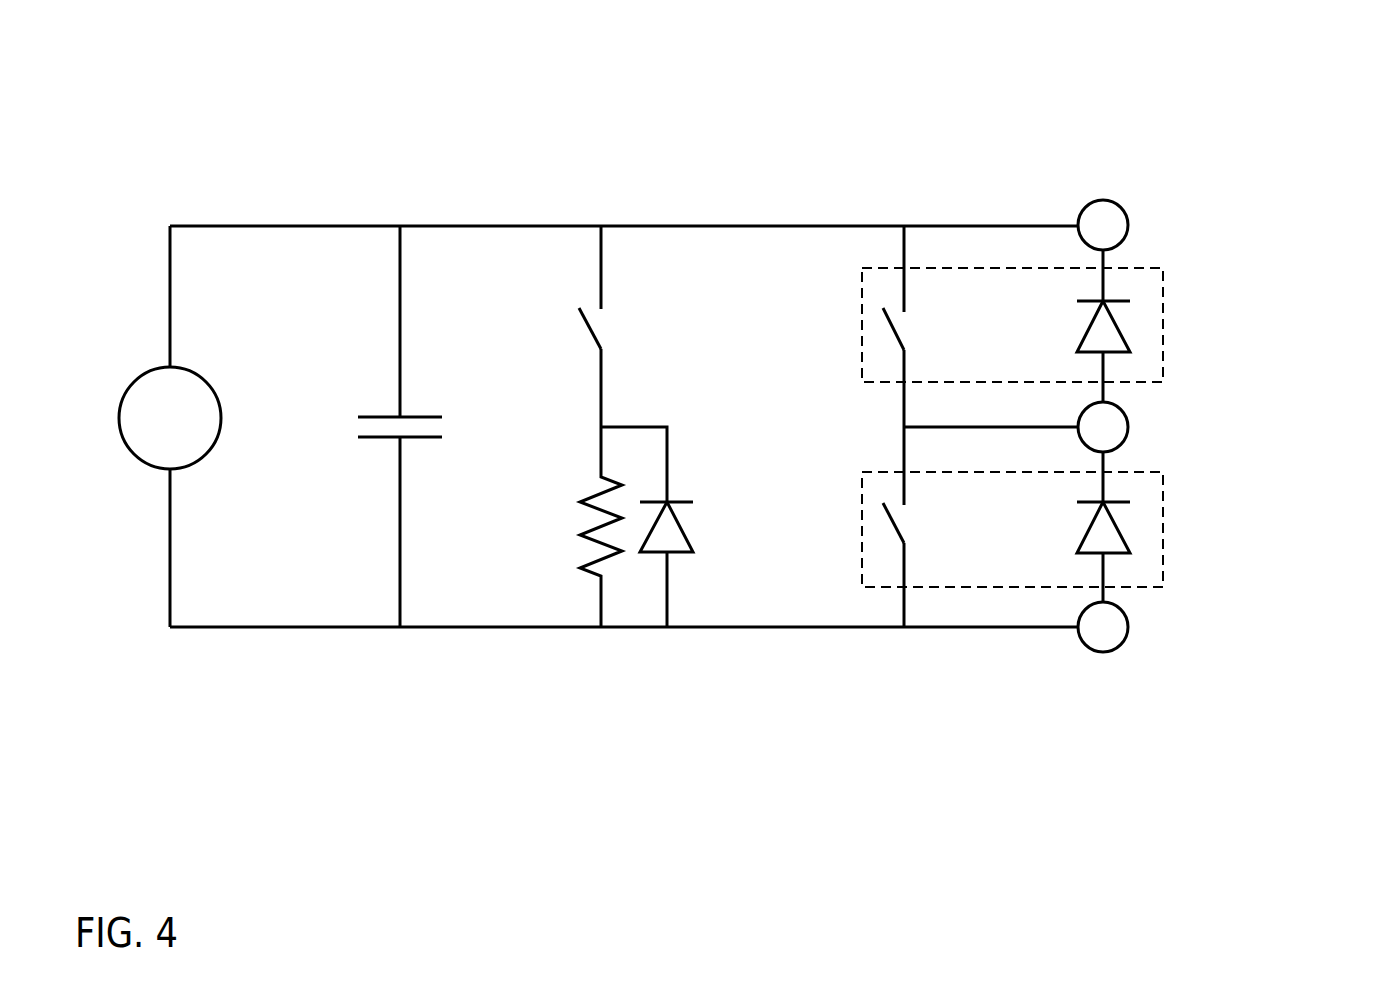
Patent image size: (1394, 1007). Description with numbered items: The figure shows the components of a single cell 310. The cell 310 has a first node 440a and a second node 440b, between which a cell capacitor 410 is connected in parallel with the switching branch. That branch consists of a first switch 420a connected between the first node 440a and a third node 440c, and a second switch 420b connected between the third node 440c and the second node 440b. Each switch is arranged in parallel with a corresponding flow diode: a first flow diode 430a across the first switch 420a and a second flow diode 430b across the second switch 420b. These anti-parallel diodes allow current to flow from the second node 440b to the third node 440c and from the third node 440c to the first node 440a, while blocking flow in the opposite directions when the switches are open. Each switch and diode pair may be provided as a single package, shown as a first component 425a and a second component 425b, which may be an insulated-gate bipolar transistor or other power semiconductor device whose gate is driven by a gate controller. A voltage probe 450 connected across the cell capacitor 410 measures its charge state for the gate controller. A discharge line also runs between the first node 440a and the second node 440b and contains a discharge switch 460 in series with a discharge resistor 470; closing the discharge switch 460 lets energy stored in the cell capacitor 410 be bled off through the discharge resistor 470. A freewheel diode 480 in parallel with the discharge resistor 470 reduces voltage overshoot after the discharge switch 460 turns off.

The cell 310 is at (1313, 120).
The cell capacitor 410 is at (352, 437).
The first switch 420a is at (888, 332).
The second switch 420b is at (888, 532).
The first component 425a is at (1163, 318).
The second component 425b is at (1163, 530).
The first flow diode 430a is at (1077, 352).
The second flow diode 430b is at (1077, 553).
The first node 440a is at (1128, 218).
The second node 440b is at (1128, 625).
The third node 440c is at (1128, 422).
The voltage probe 450 is at (184, 427).
The discharge switch 460 is at (587, 335).
The discharge resistor 470 is at (585, 574).
The freewheel diode 480 is at (690, 530).